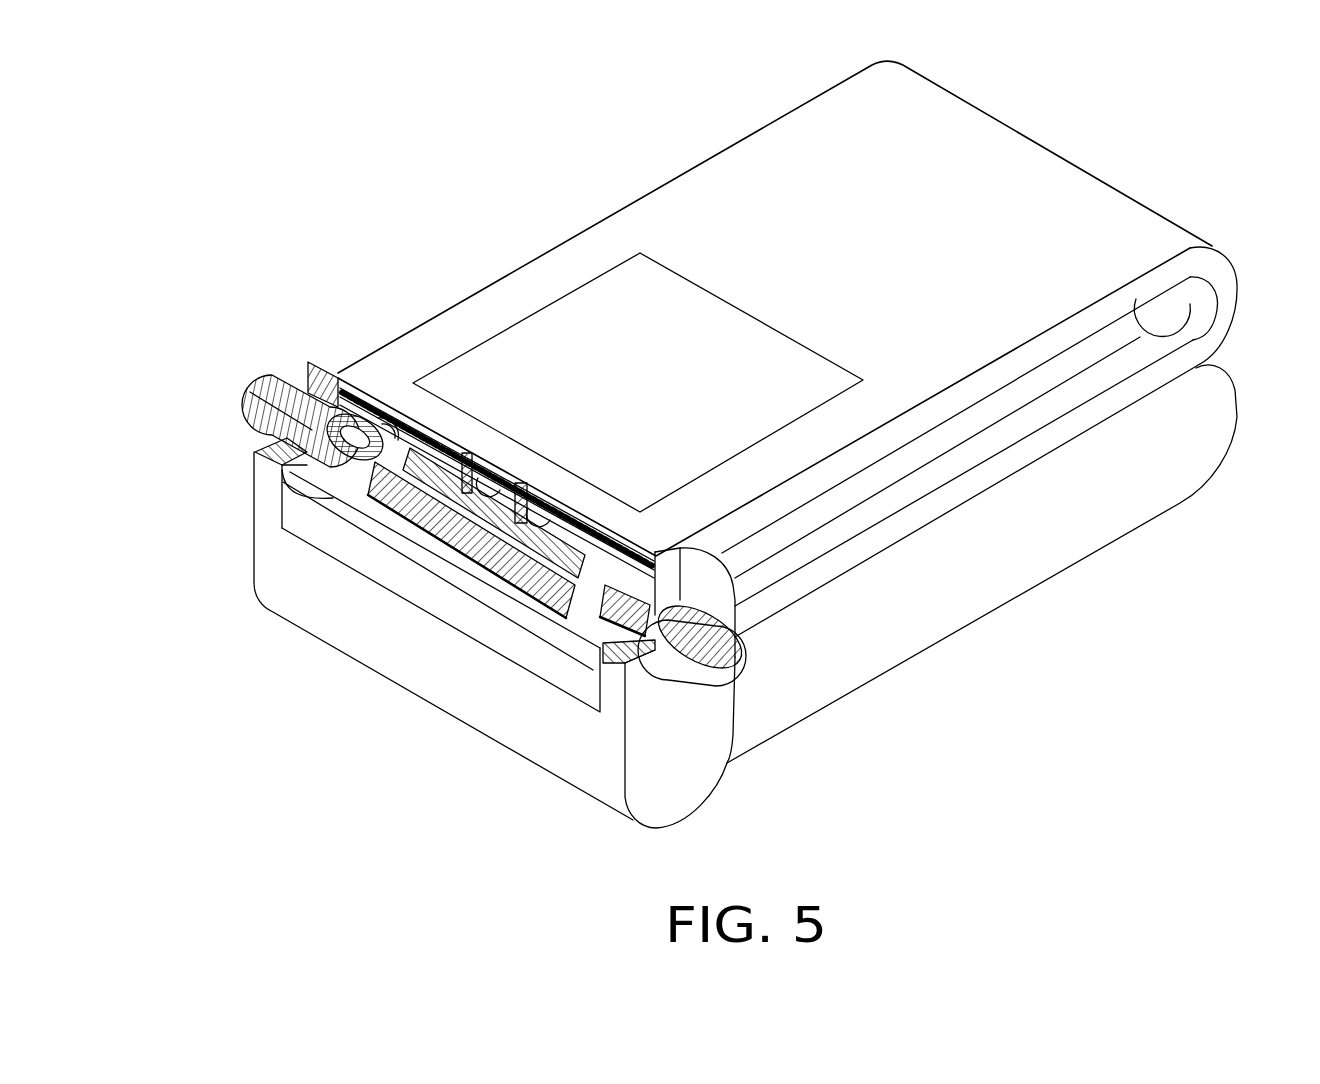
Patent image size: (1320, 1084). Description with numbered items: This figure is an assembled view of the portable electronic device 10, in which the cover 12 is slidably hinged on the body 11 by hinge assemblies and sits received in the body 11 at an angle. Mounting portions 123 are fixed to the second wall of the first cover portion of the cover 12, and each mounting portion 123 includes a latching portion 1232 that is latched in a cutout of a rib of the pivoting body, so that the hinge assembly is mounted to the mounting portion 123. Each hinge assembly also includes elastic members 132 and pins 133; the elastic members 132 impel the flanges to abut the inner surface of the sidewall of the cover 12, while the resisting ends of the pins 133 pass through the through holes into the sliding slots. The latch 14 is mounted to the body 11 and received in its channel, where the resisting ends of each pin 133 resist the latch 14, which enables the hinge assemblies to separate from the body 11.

The portable electronic device 10 is at (447, 105).
The body 11 is at (953, 585).
The cover 12 is at (713, 218).
The latch 14 is at (275, 447).
The mounting portion 123 is at (440, 528).
The latching portion 1232 is at (463, 540).
The elastic member 132 is at (360, 488).
The pin 133 is at (287, 375).